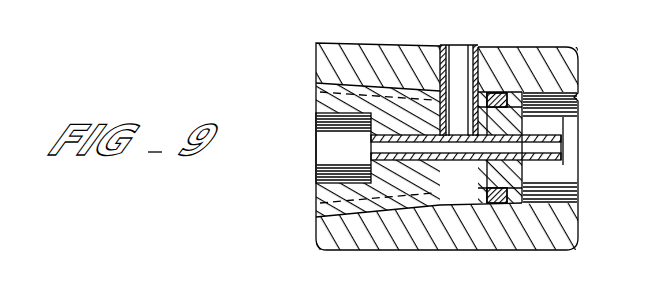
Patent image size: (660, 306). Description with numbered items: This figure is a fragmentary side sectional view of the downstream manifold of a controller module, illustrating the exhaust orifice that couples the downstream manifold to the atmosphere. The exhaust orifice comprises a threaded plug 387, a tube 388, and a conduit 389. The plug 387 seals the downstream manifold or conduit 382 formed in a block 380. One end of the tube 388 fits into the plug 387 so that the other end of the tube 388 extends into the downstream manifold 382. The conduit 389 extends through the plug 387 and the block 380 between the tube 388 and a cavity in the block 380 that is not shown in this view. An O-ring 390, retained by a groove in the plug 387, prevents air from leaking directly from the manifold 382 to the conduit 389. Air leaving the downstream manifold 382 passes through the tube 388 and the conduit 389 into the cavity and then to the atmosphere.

The block 380 is at (581, 72).
The downstream manifold or conduit 382 is at (568, 122).
The threaded plug 387 is at (318, 101).
The tube 388 is at (558, 165).
The conduit 389 is at (478, 57).
The O-ring 390 is at (498, 96).